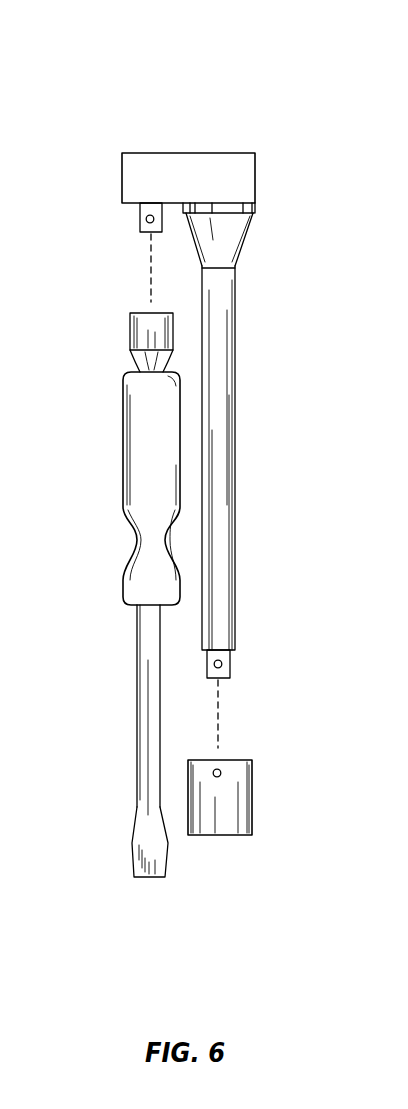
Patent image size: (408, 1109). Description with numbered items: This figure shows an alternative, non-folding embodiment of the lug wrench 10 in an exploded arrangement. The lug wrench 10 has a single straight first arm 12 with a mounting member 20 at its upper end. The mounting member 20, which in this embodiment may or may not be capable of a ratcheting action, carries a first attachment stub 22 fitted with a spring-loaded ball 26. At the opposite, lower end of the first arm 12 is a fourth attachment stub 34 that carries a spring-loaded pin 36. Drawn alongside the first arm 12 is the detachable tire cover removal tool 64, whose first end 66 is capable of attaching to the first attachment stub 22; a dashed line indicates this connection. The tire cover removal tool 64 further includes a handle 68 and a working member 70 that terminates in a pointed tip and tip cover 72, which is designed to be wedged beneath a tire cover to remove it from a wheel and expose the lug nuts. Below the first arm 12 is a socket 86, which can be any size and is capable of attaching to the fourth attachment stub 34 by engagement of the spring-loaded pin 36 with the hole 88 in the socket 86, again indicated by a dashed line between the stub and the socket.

The lug wrench 10 is at (211, 92).
The first arm 12 is at (228, 372).
The mounting member 20 is at (237, 178).
The first attachment stub 22 is at (145, 235).
The spring-loaded ball 26 is at (146, 220).
The fourth attachment stub 34 is at (228, 678).
The spring-loaded pin 36 is at (222, 664).
The detachable tire cover removal tool 64 is at (103, 496).
The first end 66 is at (147, 325).
The handle 68 is at (143, 438).
The working member 70 is at (151, 710).
The pointed tip and tip cover 72 is at (118, 859).
The socket 86 is at (232, 798).
The hole 88 is at (220, 773).